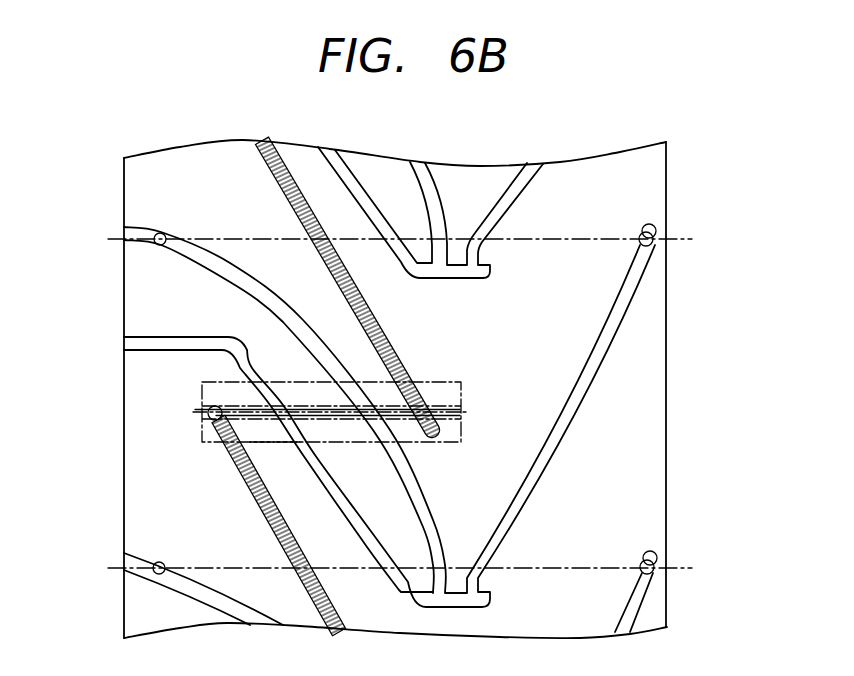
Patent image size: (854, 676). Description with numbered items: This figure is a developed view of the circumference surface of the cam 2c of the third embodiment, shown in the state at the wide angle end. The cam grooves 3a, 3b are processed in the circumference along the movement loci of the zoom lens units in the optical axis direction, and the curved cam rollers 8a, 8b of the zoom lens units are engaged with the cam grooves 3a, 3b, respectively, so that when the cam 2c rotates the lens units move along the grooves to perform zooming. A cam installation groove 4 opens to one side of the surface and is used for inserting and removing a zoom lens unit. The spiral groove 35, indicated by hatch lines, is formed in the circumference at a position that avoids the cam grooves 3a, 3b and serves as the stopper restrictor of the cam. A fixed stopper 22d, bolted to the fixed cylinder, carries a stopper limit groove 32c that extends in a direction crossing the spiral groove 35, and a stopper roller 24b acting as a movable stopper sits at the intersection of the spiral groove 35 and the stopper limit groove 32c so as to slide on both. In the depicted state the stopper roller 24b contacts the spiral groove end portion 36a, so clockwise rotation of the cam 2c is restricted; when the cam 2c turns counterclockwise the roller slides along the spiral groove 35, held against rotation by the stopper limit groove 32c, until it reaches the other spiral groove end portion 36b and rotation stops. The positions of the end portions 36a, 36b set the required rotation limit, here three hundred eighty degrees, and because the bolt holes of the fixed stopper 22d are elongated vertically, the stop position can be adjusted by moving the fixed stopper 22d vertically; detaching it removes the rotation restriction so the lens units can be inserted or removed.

The cam 2c is at (177, 167).
The curved cam roller 8a is at (156, 234).
The curved cam roller 8b is at (655, 229).
The cam groove 3a is at (243, 287).
The cam groove 3b is at (598, 370).
The cam installation groove 4 is at (158, 340).
The stopper limit groove 32c is at (248, 405).
The spiral groove end portion 36a is at (208, 412).
The spiral groove end portion 36b is at (432, 430).
The stopper roller 24b is at (212, 422).
The fixed stopper 22d is at (273, 444).
The spiral groove 35 is at (287, 512).